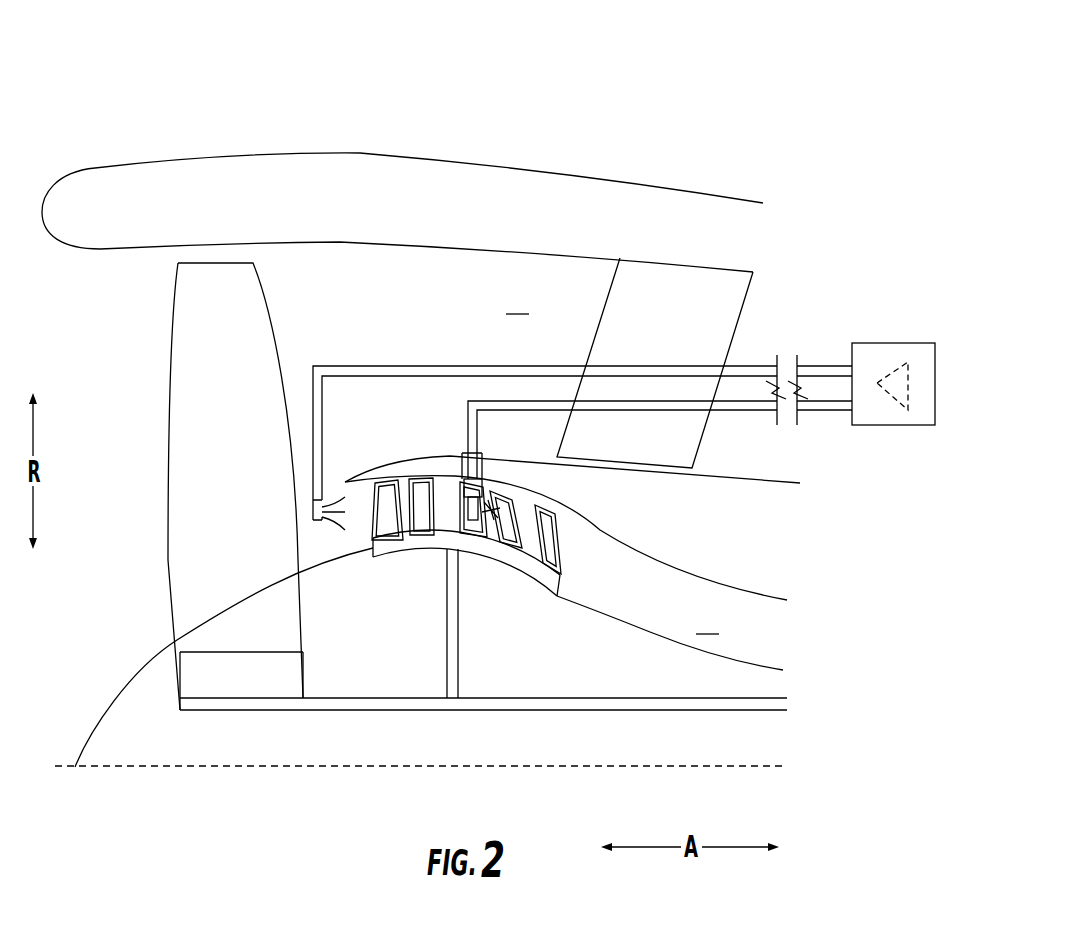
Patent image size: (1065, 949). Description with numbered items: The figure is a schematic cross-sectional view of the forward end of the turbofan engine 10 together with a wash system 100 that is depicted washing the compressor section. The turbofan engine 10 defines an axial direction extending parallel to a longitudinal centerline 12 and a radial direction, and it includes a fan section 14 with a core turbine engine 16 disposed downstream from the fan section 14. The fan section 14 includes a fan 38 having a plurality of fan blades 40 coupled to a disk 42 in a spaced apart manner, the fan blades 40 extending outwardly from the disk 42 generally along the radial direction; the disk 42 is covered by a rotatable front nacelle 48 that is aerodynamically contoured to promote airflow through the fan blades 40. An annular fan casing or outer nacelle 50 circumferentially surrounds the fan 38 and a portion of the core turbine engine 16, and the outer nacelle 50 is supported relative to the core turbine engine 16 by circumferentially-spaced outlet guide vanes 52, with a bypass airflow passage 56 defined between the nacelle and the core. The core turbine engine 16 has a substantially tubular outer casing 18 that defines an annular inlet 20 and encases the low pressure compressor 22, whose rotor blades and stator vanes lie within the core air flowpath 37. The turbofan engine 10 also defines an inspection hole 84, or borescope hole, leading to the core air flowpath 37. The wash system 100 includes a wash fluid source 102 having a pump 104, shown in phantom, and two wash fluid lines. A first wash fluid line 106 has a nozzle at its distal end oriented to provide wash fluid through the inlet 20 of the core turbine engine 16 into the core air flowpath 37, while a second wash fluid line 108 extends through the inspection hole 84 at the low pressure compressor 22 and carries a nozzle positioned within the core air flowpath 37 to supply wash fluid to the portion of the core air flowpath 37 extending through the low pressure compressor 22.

The turbofan engine 10 is at (558, 85).
The longitudinal centerline 12 is at (207, 768).
The fan section 14 is at (209, 184).
The core turbine engine 16 is at (767, 289).
The outer casing 18 is at (768, 483).
The annular inlet 20 is at (350, 546).
The low pressure compressor 22 is at (582, 498).
The core air flowpath 37 is at (670, 633).
The fan 38 is at (126, 329).
The fan blades 40 is at (168, 430).
The disk 42 is at (193, 675).
The front nacelle 48 is at (103, 718).
The outer nacelle 50 is at (360, 153).
The outlet guide vanes 52 is at (672, 290).
The bypass airflow passage 56 is at (517, 298).
The inspection hole 84 is at (462, 440).
The wash system 100 is at (857, 322).
The wash fluid source 102 is at (913, 343).
The pump 104 is at (897, 406).
The first wash fluid line 106 is at (350, 365).
The second wash fluid line 108 is at (607, 413).